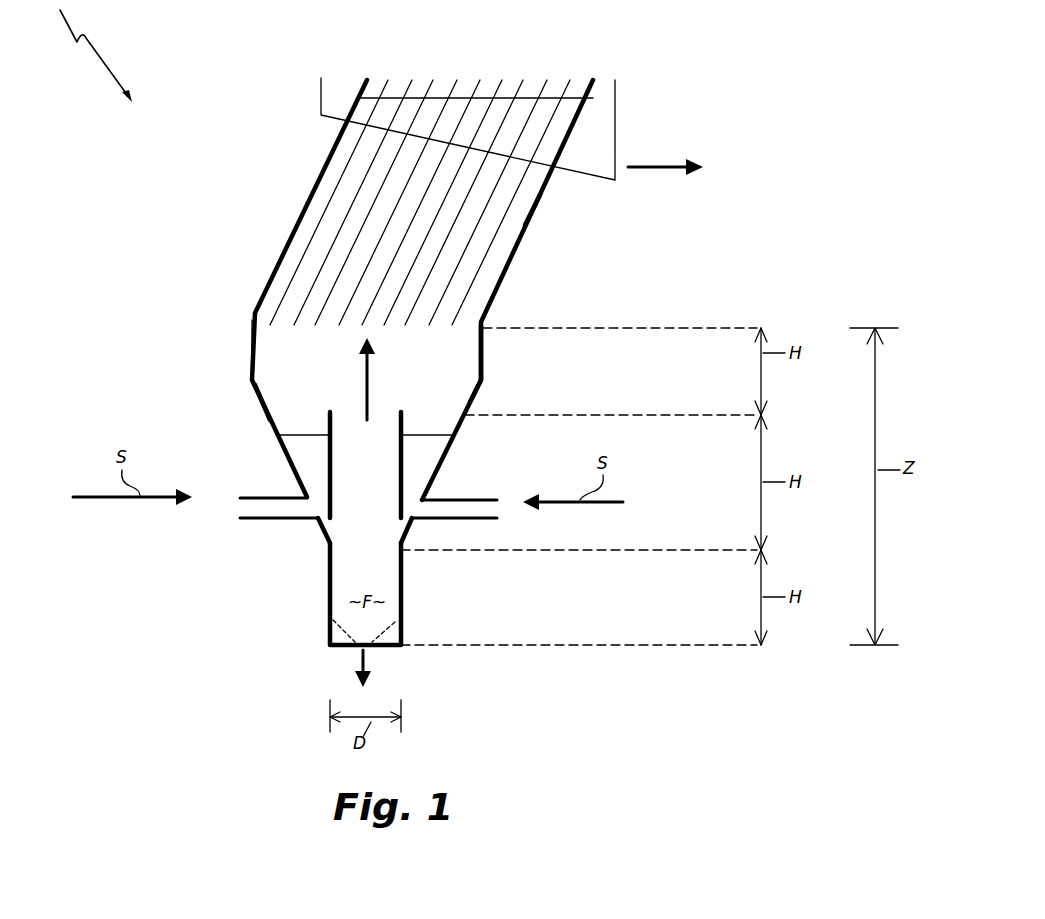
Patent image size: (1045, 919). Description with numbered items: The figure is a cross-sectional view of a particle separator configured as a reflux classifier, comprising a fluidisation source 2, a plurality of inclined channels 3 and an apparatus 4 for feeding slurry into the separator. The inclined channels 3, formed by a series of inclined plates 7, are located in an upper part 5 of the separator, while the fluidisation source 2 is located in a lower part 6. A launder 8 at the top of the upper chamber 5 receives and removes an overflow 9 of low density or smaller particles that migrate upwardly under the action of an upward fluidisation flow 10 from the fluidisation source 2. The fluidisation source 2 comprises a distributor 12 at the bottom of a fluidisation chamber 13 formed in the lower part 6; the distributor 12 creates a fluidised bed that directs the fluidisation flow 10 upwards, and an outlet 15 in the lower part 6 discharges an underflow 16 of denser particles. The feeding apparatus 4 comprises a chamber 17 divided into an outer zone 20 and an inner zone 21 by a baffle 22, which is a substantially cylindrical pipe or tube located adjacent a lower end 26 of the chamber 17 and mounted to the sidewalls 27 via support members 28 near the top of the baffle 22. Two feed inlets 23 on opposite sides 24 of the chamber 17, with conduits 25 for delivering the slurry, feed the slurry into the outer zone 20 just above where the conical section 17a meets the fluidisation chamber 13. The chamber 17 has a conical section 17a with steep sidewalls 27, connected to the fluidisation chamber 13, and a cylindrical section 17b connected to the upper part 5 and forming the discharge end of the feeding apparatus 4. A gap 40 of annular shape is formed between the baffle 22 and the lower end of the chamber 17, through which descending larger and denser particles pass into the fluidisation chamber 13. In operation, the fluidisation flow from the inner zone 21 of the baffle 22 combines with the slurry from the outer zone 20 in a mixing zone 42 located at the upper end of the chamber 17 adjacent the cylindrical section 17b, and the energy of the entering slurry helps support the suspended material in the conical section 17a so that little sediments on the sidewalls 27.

The fluidisation source 2 is at (313, 630).
The inclined channels 3 is at (505, 190).
The apparatus for feeding slurry 4 is at (198, 443).
The upper part 5 is at (523, 238).
The lower part 6 is at (405, 615).
The inclined plates 7 is at (367, 222).
The launder 8 is at (617, 100).
The overflow 9 is at (660, 163).
The fluidisation flow 10 is at (362, 378).
The distributor 12 is at (343, 627).
The fluidisation chamber 13 is at (377, 577).
The outlet 15 is at (372, 653).
The underflow 16 is at (355, 658).
The chamber 17 is at (483, 379).
The conical section 17a is at (467, 410).
The cylindrical section 17b is at (483, 352).
The outer zone 20 is at (313, 453).
The inner zone 21 is at (365, 465).
The baffle 22 is at (325, 425).
The feed inlets 23 is at (307, 505).
The opposite sides 24 is at (317, 522).
The conduits 25 is at (278, 495).
The lower end 26 is at (408, 555).
The sidewalls 27 is at (270, 394).
The support members 28 is at (447, 450).
The gap 40 is at (400, 530).
The mixing zone 42 is at (435, 350).